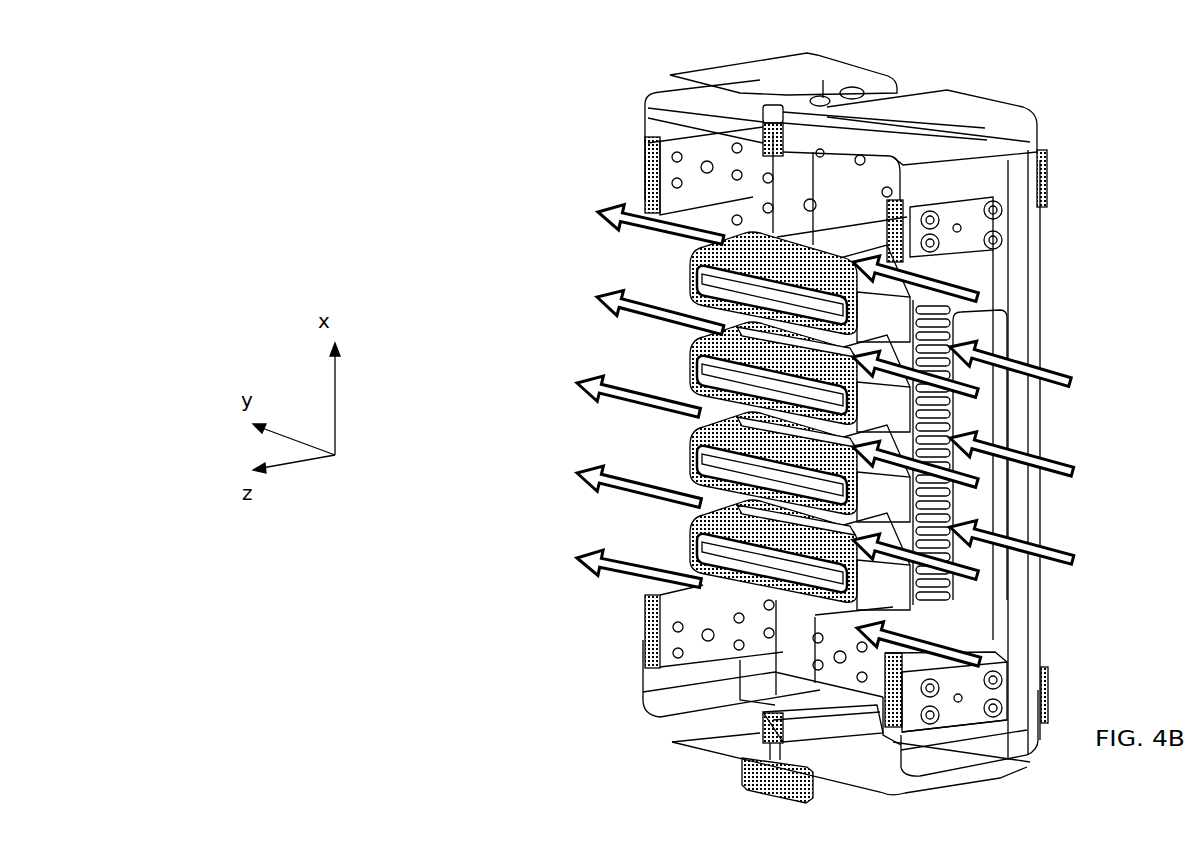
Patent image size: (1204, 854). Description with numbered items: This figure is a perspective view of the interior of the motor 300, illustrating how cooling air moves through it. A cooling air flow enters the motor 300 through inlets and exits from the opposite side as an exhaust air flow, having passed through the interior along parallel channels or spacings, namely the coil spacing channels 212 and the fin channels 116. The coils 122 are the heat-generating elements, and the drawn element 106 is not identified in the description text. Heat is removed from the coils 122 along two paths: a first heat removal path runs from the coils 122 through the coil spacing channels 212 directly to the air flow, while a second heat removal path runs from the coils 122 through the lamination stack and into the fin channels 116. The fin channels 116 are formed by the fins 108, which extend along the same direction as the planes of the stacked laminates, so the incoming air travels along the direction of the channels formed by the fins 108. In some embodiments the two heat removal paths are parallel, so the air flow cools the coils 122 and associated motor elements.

The motor 300 is at (1128, 88).
The battery cell 106 is at (700, 268).
The coils 122 is at (735, 334).
The coil spacing channels 212 is at (720, 337).
The fin channels 116 is at (962, 358).
The fins 108 is at (905, 490).